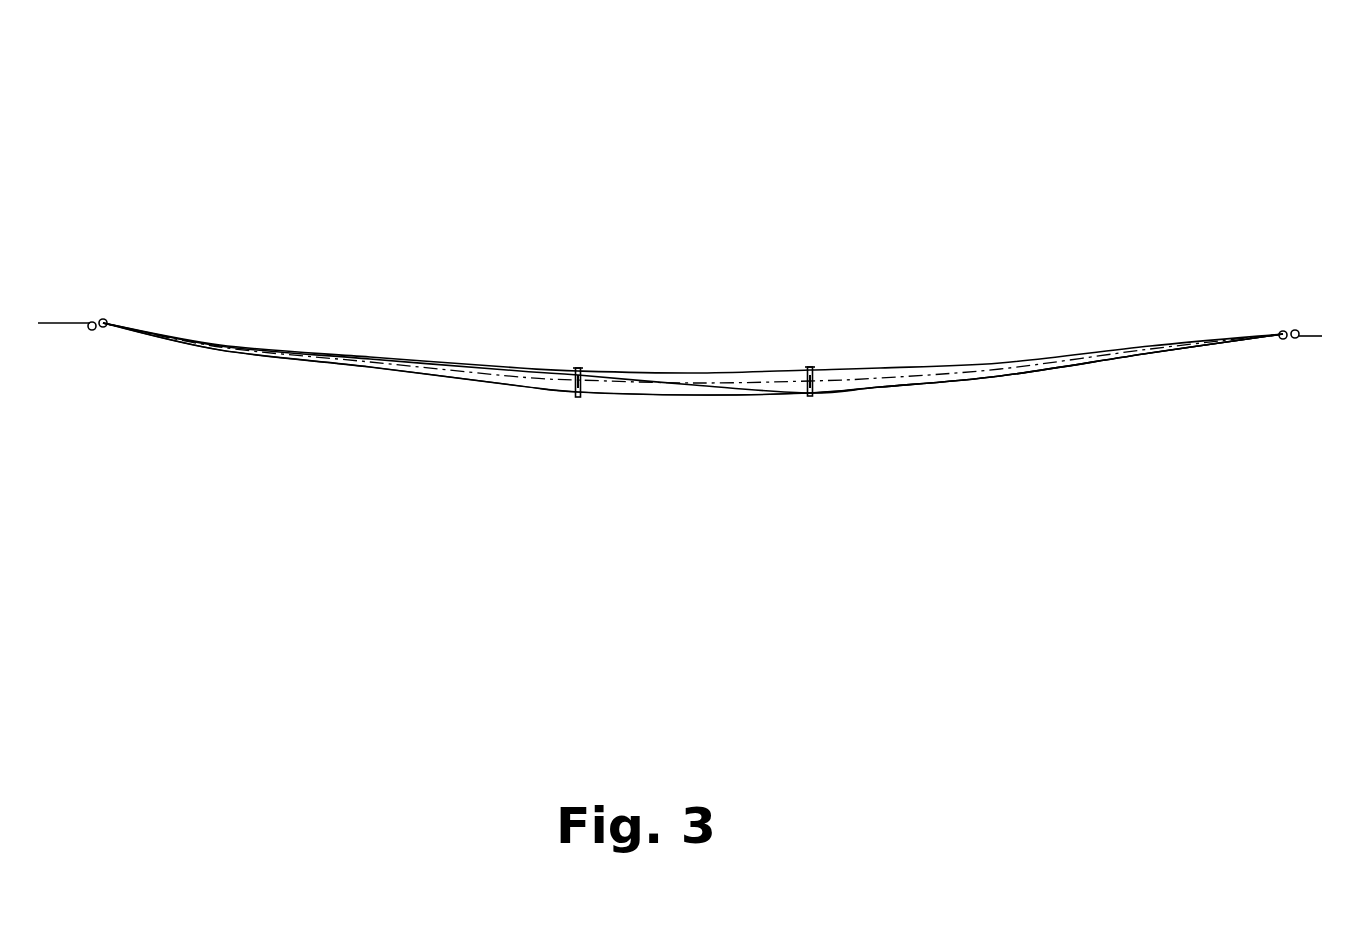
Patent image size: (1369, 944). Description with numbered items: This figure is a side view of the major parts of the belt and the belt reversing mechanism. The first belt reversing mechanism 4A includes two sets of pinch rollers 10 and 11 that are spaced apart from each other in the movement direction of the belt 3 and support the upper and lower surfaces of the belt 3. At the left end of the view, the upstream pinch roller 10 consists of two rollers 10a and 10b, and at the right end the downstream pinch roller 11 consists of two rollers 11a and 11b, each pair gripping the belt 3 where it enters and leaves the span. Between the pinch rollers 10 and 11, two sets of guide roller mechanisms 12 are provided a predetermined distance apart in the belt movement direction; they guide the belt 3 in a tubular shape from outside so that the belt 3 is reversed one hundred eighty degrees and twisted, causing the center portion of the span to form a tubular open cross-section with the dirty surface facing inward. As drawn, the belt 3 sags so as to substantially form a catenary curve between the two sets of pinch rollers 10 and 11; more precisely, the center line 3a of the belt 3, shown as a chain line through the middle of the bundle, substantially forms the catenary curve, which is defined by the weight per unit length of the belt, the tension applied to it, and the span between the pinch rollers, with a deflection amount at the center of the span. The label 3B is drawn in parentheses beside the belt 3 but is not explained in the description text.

The first belt reversing mechanism 4A is at (812, 154).
The belt 3 is at (948, 383).
The bowstring (second bowstring) 3B is at (693, 359).
The center line 3a is at (502, 380).
The guide roller mechanism 12 is at (578, 399).
The upstream pinch roller 10 is at (170, 230).
The roller 10a is at (93, 321).
The roller 10b is at (106, 318).
The downstream pinch roller 11 is at (1360, 247).
The roller 11a is at (1284, 330).
The roller 11b is at (1299, 330).